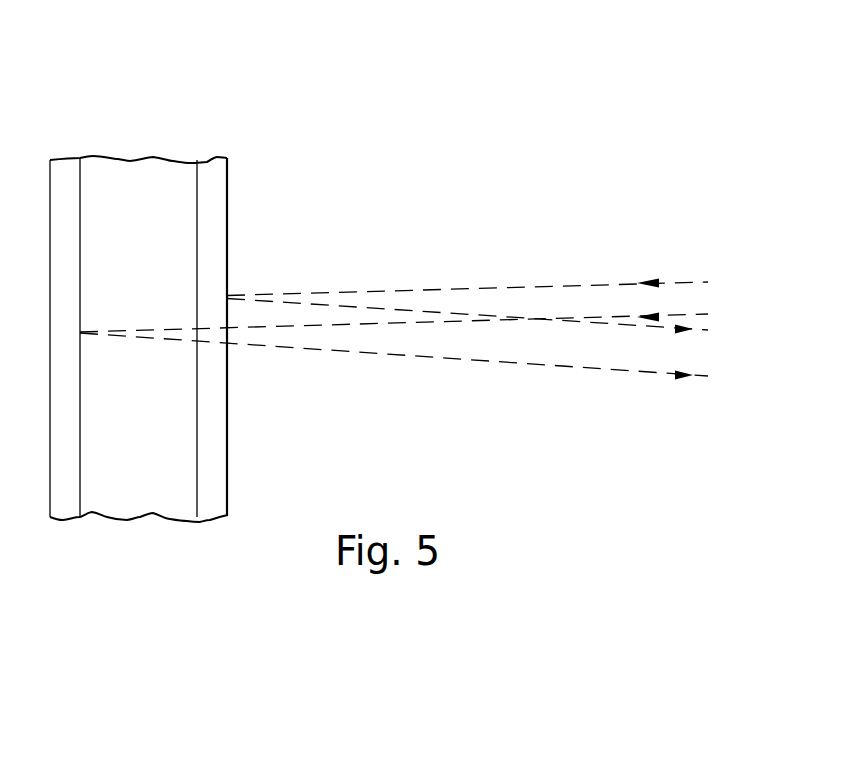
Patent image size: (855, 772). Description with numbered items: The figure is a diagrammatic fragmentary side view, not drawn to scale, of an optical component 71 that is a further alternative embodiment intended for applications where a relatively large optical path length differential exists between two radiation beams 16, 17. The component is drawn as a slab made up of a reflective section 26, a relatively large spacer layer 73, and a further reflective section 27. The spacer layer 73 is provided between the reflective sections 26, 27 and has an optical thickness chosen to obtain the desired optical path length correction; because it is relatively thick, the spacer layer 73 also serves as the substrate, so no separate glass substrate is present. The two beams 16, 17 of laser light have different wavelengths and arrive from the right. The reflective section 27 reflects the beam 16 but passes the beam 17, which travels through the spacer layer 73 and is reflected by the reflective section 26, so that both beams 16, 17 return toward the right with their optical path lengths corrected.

The optical component 71 is at (132, 262).
The reflective section 26 is at (63, 170).
The spacer layer 73 is at (135, 170).
The reflective section 27 is at (210, 170).
The beam 16 is at (674, 283).
The beam 17 is at (701, 313).